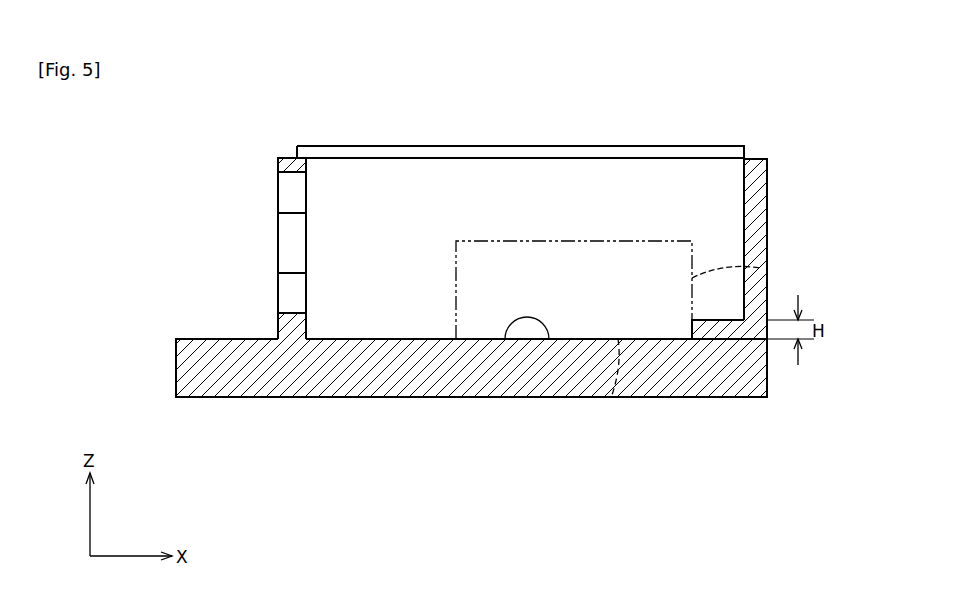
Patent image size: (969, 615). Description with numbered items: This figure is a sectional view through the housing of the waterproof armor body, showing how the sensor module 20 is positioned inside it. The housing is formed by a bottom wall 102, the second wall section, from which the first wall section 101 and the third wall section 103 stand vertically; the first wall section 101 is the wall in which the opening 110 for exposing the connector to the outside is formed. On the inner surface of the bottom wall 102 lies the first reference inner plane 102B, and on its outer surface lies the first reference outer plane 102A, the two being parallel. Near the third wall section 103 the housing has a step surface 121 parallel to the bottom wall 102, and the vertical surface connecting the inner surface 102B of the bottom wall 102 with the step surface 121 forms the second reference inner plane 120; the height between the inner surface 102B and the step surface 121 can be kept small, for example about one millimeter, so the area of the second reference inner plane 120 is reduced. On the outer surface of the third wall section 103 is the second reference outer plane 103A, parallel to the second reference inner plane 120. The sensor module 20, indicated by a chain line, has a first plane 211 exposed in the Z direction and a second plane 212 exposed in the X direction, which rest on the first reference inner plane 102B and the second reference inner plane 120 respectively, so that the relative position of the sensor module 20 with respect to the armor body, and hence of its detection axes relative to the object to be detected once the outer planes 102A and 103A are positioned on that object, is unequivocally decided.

The sensor module 20 is at (546, 240).
The first wall section 101 is at (276, 167).
The bottom wall 102 is at (174, 370).
The first reference outer plane 102A is at (399, 398).
The first reference inner plane 102B is at (505, 339).
The third wall section 103 is at (770, 178).
The second reference outer plane 103A is at (768, 205).
The opening 110 is at (278, 245).
The second reference inner plane 120 is at (692, 333).
The step surface 121 is at (717, 321).
The first plane 211 is at (612, 395).
The second plane 212 is at (760, 268).